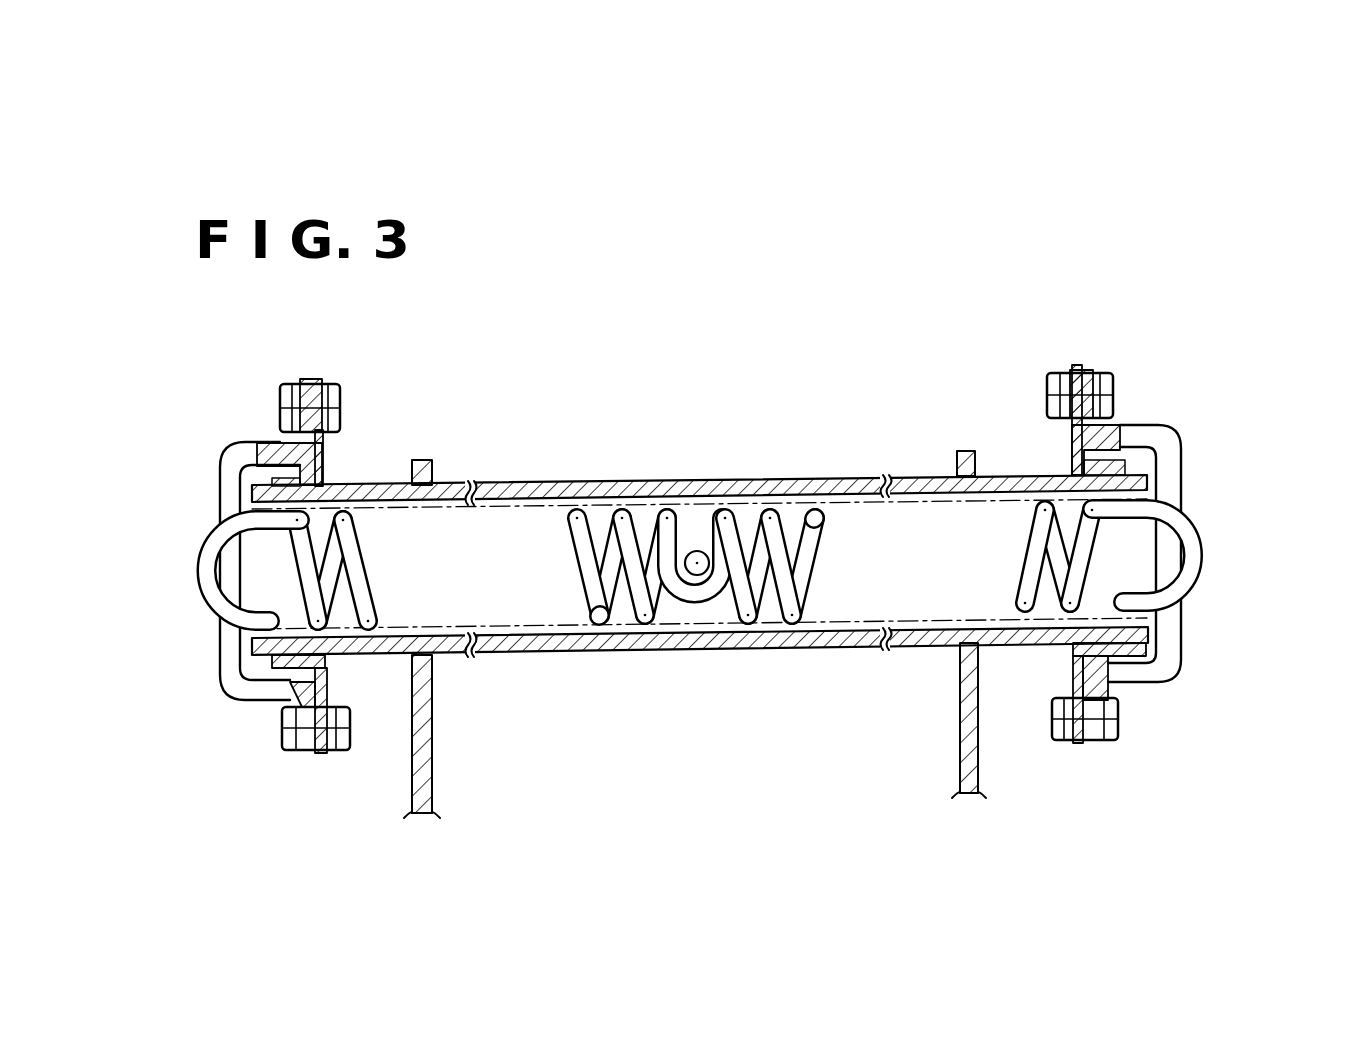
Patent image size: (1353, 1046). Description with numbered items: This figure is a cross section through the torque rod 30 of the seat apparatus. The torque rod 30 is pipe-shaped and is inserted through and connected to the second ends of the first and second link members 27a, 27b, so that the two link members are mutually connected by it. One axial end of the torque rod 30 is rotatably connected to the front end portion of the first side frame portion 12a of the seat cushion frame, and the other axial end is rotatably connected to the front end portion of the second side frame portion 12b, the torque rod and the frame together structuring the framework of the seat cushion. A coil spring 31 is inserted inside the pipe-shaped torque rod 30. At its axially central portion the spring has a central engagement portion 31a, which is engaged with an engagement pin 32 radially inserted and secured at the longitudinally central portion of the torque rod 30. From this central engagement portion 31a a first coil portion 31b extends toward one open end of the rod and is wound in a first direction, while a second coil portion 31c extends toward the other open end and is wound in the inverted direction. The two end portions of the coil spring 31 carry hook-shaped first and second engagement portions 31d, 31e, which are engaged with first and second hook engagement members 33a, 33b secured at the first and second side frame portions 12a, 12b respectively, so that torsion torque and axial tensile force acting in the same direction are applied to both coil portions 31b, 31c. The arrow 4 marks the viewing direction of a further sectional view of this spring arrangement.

The section view direction arrow 4 is at (1250, 557).
The first side frame portion 12a is at (1072, 440).
The second side frame portion 12b is at (323, 465).
The first link member 27a is at (958, 711).
The second link member 27b is at (426, 768).
The torque rod 30 is at (557, 487).
The coil spring 31 is at (712, 566).
The central engagement portion 31a is at (697, 603).
The first coil portion 31b is at (820, 508).
The second coil portion 31c is at (592, 616).
The first engagement portion 31d is at (1193, 538).
The second engagement portion 31e is at (212, 565).
The engagement pin 32 is at (690, 550).
The first hook engagement member 33a is at (1172, 662).
The second hook engagement member 33b is at (228, 481).